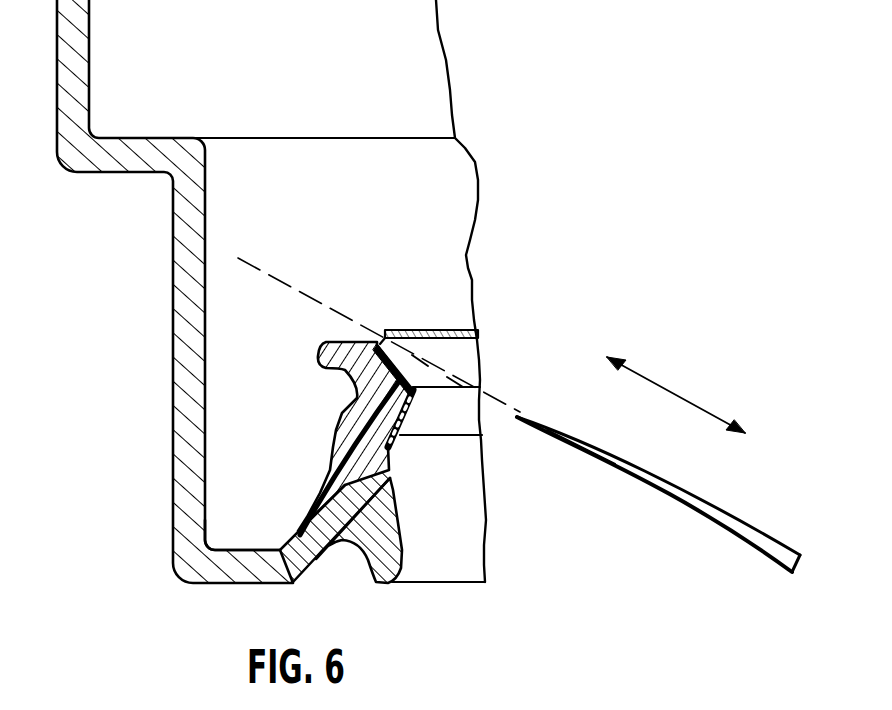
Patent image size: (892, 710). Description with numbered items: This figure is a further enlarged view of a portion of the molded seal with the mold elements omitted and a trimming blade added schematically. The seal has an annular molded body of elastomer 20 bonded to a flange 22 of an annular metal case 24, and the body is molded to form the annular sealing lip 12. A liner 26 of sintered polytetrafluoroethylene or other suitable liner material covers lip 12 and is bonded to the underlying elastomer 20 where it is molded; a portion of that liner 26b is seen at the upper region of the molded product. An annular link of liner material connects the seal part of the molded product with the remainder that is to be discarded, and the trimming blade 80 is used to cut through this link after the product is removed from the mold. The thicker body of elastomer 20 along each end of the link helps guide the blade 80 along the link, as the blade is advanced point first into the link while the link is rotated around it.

The annular sealing lip 12 is at (357, 398).
The elastomer 20 is at (368, 554).
The flange 22 is at (232, 550).
The annular metal case 24 is at (172, 263).
The liner 26 is at (404, 420).
The lip strip 26b is at (440, 328).
The trimming blade 80 is at (625, 475).